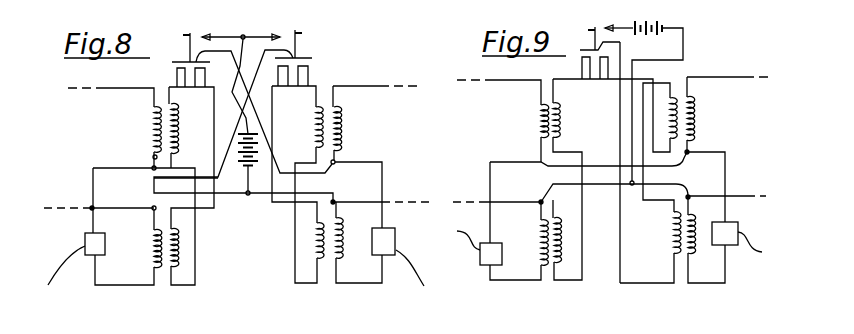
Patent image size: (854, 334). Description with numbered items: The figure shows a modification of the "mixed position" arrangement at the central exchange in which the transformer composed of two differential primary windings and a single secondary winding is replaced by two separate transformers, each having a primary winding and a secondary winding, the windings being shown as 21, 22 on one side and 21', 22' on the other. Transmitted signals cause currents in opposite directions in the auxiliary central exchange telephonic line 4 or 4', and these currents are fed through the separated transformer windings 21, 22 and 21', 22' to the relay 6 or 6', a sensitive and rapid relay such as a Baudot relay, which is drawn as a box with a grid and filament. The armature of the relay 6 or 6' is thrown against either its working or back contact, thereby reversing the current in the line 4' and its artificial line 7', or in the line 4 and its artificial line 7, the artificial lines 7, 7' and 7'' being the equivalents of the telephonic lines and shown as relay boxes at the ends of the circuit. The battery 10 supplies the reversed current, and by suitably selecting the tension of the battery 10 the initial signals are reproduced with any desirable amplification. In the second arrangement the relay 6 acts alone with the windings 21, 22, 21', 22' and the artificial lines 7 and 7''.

In FIG. 8, the auxiliary central exchange telephonic line 4 is at (99, 149).
In FIG. 9, the auxiliary central exchange telephonic line 4 is at (498, 142).
In FIG. 8, the auxiliary central exchange telephonic line 4' is at (380, 145).
In FIG. 9, the auxiliary central exchange telephonic line 4' is at (727, 136).
In FIG. 8, the relay 6 is at (250, 131).
In FIG. 9, the relay 6 is at (613, 155).
In FIG. 8, the relay 6' is at (243, 156).
In FIG. 8, the artificial line 7 is at (110, 241).
In FIG. 9, the artificial line 7 is at (551, 216).
In FIG. 8, the artificial line 7' is at (389, 237).
In FIG. 9, the artificial line 7'' is at (739, 217).
In FIG. 8, the battery 10 is at (262, 160).
In FIG. 9, the battery 10 is at (644, 103).
In FIG. 8, the transformer winding 21 is at (150, 137).
In FIG. 9, the transformer winding 21 is at (534, 132).
In FIG. 8, the transformer winding 21' is at (344, 125).
In FIG. 9, the transformer winding 21' is at (696, 115).
In FIG. 8, the transformer winding 22 is at (165, 223).
In FIG. 9, the transformer winding 22 is at (630, 224).
In FIG. 8, the transformer winding 22' is at (342, 230).
In FIG. 9, the transformer winding 22' is at (658, 239).